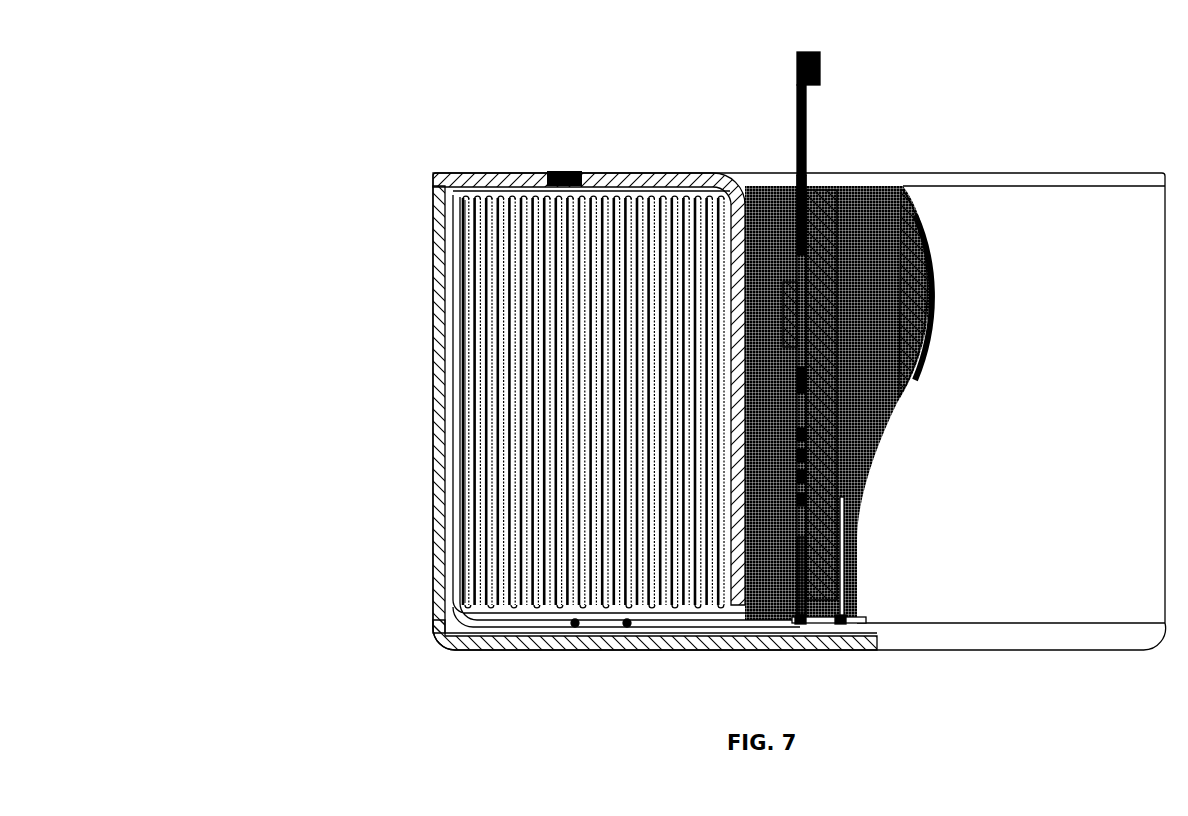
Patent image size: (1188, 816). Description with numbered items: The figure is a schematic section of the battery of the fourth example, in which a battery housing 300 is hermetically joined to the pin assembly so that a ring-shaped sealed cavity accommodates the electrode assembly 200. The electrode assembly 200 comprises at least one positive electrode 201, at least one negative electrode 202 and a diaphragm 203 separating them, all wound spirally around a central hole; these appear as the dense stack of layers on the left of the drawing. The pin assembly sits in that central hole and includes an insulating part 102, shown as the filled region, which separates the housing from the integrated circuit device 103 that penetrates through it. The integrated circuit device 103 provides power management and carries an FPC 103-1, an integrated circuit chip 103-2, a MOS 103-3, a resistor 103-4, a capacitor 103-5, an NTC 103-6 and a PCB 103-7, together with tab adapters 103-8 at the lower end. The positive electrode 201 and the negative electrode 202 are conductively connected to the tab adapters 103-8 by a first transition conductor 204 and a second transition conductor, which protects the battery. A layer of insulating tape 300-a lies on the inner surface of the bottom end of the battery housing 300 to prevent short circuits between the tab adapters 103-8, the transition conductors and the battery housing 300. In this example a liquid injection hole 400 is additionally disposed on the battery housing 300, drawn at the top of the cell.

The insulating part 102 is at (882, 225).
The integrated circuit device 103 is at (825, 366).
The FPC 103-1 is at (796, 172).
The integrated circuit (IC) chip 103-2 is at (785, 282).
The MOS 103-3 is at (837, 378).
The resistor 103-4 is at (837, 425).
The capacitor 103-5 is at (838, 467).
The NTC 103-6 is at (838, 492).
The PCB 103-7 is at (822, 535).
The tab adapters 103-8 is at (815, 628).
The electrode assembly 200 is at (557, 408).
The positive electrode 201 is at (475, 262).
The negative electrode 202 is at (481, 340).
The diaphragm 203 is at (478, 428).
The first transition conductor 204 is at (391, 401).
The battery housing 300 is at (601, 413).
The insulating tape 300-a is at (472, 633).
The liquid injection hole 400 is at (540, 173).